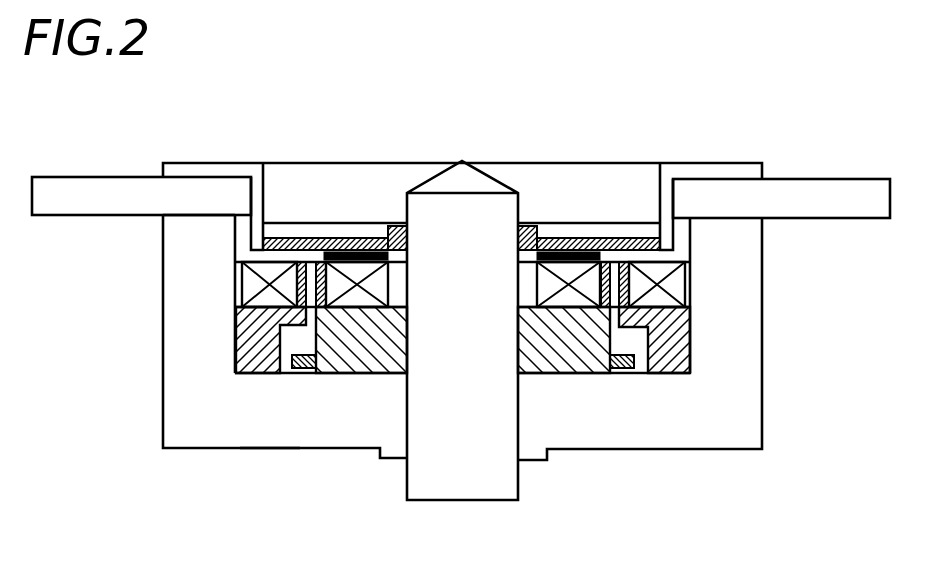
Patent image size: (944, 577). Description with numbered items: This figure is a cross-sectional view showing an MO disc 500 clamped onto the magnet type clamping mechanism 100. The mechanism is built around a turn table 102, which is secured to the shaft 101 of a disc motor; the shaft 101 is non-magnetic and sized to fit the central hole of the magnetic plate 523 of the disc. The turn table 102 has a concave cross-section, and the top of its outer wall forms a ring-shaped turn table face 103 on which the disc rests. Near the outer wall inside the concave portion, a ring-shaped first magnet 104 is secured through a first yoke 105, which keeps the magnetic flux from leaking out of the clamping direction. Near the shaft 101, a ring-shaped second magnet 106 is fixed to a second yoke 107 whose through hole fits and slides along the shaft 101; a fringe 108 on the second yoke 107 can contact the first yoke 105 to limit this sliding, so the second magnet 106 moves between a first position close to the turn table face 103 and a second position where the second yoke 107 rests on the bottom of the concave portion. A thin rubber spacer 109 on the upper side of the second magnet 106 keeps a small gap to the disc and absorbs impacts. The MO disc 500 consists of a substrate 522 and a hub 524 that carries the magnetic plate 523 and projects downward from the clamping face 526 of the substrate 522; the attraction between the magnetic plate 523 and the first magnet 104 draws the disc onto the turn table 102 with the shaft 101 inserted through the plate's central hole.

The magnet type clamping mechanism 100 is at (272, 476).
The shaft 101 is at (483, 213).
The turn table 102 is at (745, 325).
The turn table face 103 is at (729, 212).
The first magnet 104 is at (677, 278).
The first yoke 105 is at (687, 345).
The second magnet 106 is at (592, 280).
The second yoke 107 is at (570, 357).
The fringe 108 is at (623, 363).
The spacer 109 is at (565, 240).
The MO disc 500 is at (213, 171).
The substrate 522 is at (65, 190).
The magnetic plate 523 is at (348, 242).
The hub 524 is at (258, 180).
The clamping face 526 is at (192, 218).